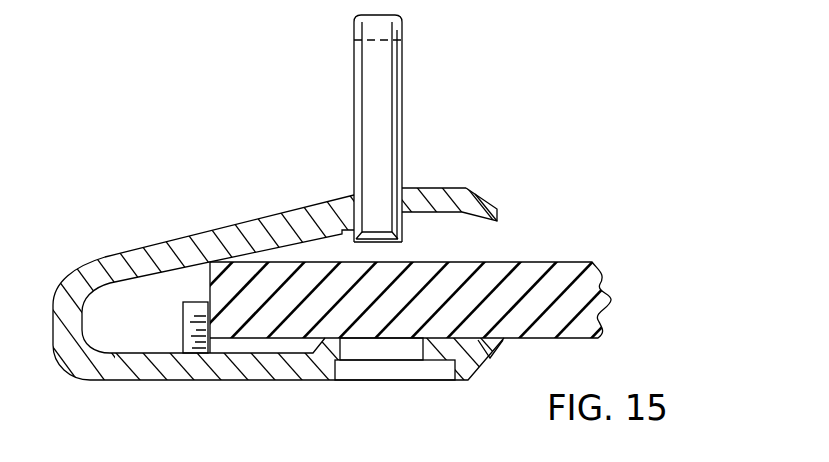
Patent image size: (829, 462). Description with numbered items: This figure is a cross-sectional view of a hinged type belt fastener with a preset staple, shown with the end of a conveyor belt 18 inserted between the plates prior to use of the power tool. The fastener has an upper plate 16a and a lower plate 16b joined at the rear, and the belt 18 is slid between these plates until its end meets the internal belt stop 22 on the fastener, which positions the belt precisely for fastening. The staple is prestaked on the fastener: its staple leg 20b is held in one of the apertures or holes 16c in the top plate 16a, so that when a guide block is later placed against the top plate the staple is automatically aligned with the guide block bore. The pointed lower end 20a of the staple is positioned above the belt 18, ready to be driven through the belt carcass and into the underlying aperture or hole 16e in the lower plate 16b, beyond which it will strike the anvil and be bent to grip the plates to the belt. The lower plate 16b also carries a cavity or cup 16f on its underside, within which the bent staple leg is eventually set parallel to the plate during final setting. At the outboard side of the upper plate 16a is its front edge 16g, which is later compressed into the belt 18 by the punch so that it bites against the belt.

The upper plate 16a is at (293, 208).
The lower plate 16b is at (272, 380).
The apertures or holes in the top plate 16c is at (428, 190).
The aperture or hole in the lower fastener plate 16e is at (399, 353).
The cavity or cup 16f is at (368, 368).
The front edge of the upper plate 16g is at (485, 197).
The conveyor belt 18 is at (540, 270).
The lower end of staple 20a is at (388, 249).
The staple leg 20b is at (387, 77).
The internal belt stop 22 is at (184, 324).